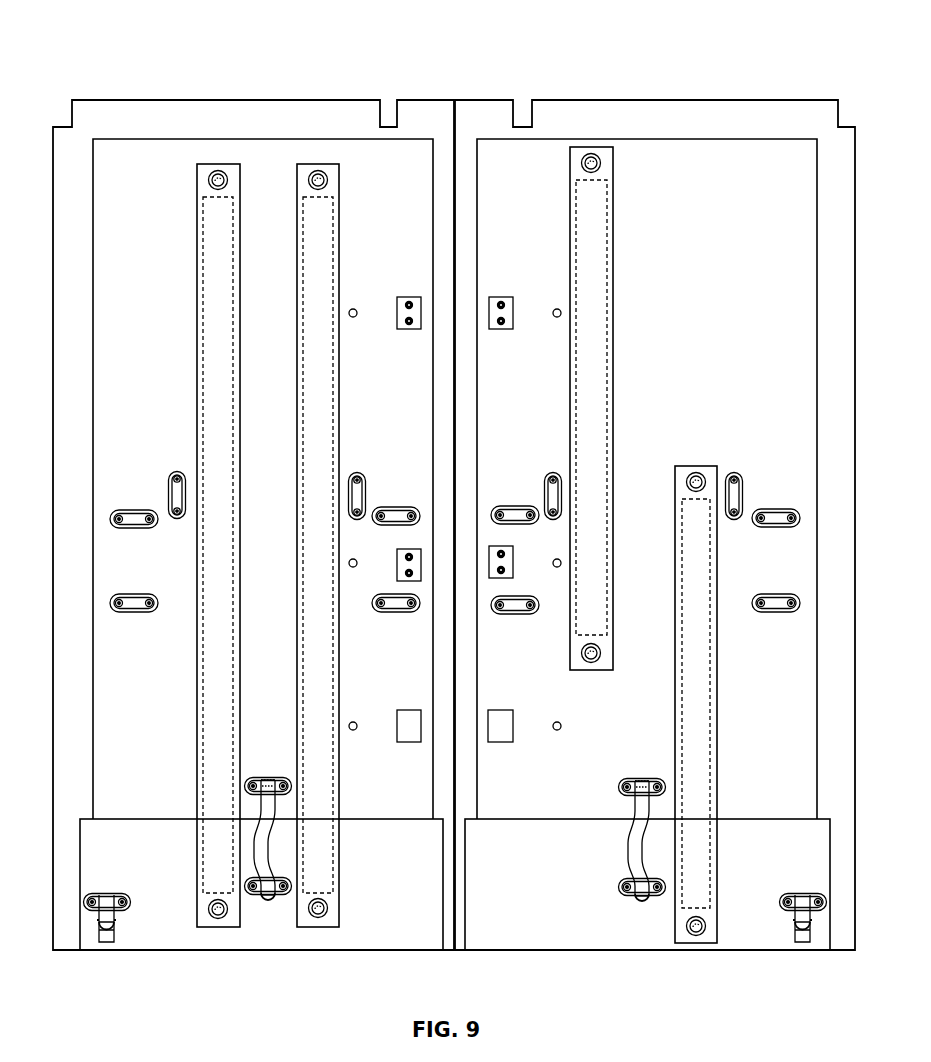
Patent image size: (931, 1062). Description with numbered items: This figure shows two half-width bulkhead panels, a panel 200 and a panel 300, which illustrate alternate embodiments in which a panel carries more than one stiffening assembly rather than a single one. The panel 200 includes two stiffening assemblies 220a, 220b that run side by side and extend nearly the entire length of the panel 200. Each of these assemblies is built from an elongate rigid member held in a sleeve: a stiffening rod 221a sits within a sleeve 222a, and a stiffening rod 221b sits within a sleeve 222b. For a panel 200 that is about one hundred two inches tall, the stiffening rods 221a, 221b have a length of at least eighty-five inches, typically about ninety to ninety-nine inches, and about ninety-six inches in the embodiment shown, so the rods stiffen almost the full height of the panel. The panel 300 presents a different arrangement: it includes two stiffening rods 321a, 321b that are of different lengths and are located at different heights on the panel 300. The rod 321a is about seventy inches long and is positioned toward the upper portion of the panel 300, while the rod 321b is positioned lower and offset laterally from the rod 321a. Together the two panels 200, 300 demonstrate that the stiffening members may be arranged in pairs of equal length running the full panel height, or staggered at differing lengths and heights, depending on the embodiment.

The panel 200 is at (79, 67).
The panel 300 is at (796, 63).
The stiffening assembly 220a is at (186, 211).
The stiffening assembly 220b is at (355, 205).
The stiffening rod 221a is at (220, 311).
The stiffening rod 221b is at (318, 313).
The sleeve 222a is at (198, 378).
The sleeve 222b is at (340, 385).
The stiffening rod 321a is at (595, 268).
The stiffening rod 321b is at (697, 653).